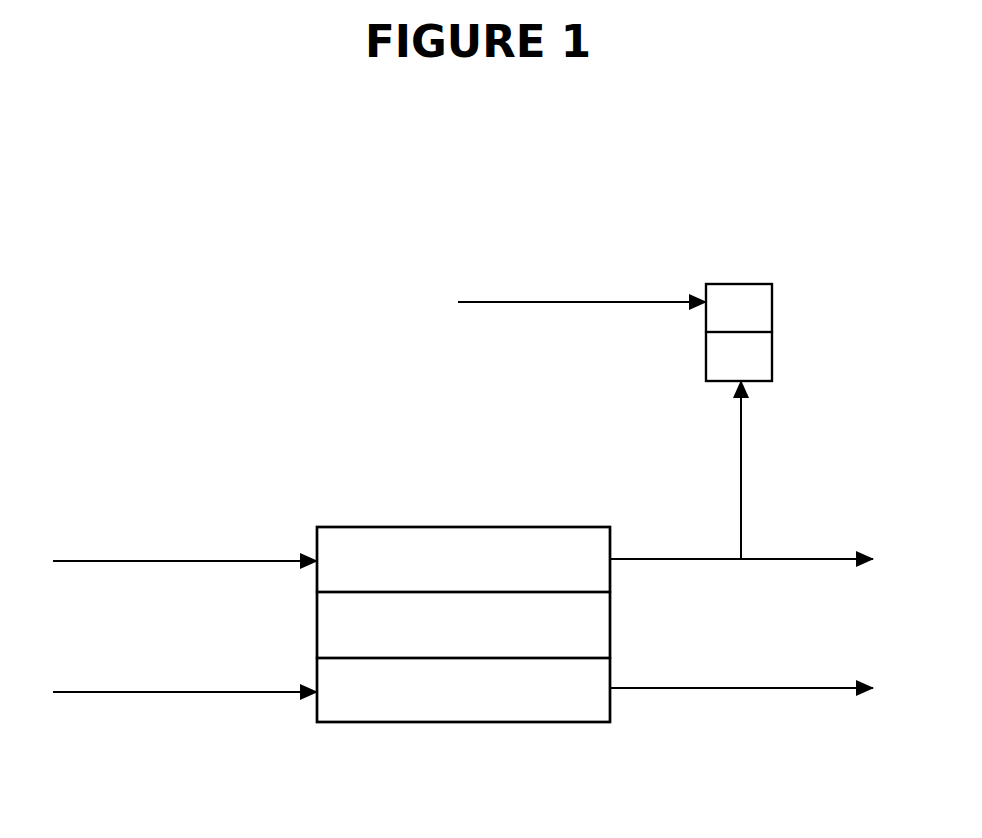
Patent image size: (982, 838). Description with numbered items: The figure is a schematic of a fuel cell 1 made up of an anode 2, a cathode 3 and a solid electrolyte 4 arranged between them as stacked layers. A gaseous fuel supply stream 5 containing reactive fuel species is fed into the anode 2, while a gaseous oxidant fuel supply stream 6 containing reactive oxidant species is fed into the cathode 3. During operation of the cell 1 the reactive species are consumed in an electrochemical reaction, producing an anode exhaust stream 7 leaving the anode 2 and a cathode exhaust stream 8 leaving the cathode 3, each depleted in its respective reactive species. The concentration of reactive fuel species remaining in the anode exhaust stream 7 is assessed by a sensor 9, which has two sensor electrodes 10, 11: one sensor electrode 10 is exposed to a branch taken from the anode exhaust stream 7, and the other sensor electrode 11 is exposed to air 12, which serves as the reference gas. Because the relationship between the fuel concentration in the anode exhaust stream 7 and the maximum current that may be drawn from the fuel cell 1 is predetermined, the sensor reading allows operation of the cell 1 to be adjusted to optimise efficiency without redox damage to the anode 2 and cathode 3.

The fuel cell 1 is at (463, 651).
The anode 2 is at (463, 559).
The cathode 3 is at (463, 690).
The solid electrolyte 4 is at (463, 625).
The gaseous fuel supply stream 5 is at (185, 536).
The gaseous oxidant fuel supply stream 6 is at (185, 667).
The anode exhaust stream 7 is at (741, 470).
The cathode exhaust stream 8 is at (741, 663).
The sensor 9 is at (770, 332).
The sensor electrode 10 is at (739, 356).
The sensor electrode 11 is at (739, 308).
The air 12 is at (557, 311).